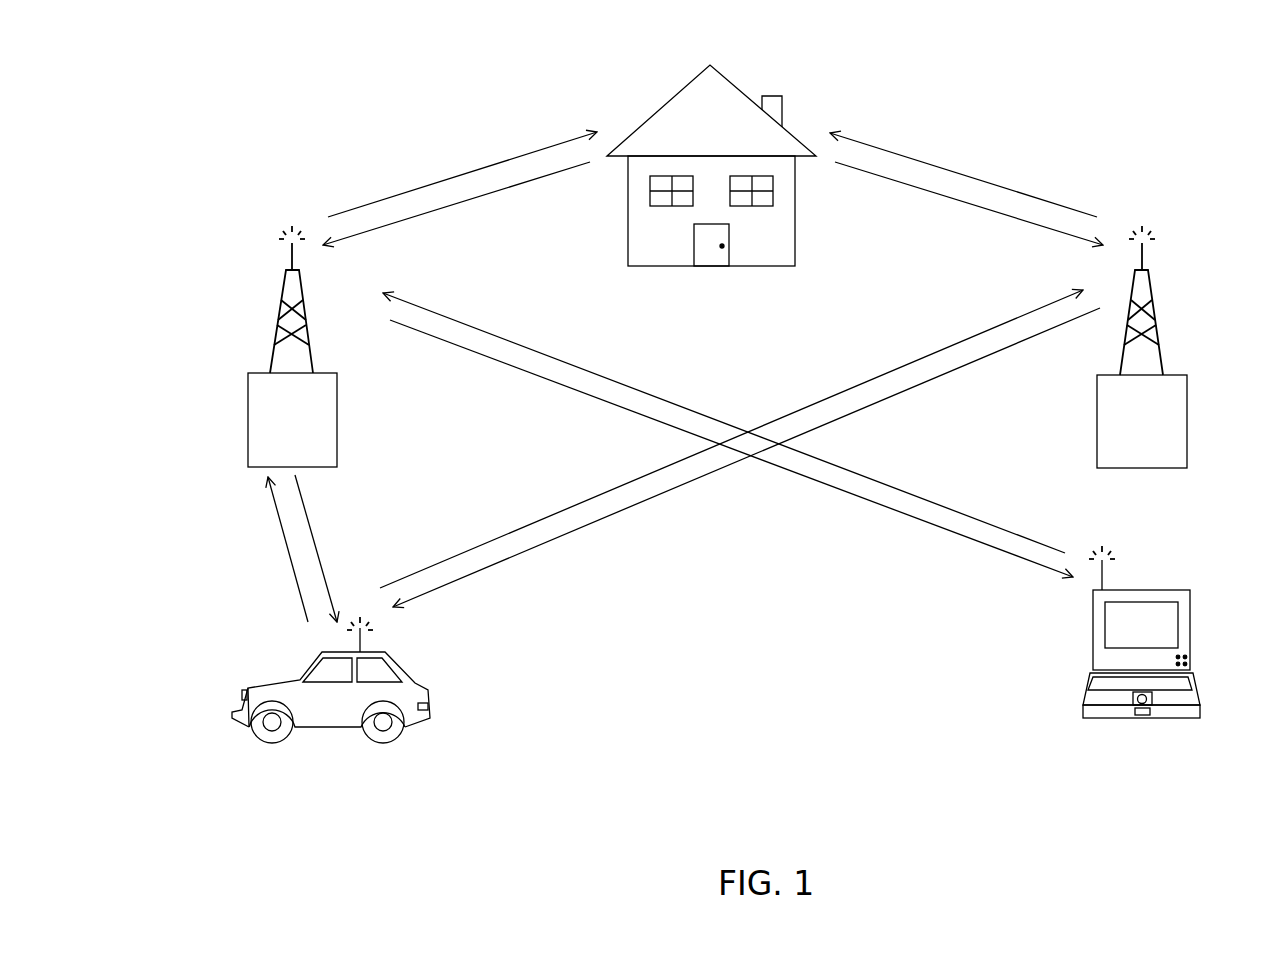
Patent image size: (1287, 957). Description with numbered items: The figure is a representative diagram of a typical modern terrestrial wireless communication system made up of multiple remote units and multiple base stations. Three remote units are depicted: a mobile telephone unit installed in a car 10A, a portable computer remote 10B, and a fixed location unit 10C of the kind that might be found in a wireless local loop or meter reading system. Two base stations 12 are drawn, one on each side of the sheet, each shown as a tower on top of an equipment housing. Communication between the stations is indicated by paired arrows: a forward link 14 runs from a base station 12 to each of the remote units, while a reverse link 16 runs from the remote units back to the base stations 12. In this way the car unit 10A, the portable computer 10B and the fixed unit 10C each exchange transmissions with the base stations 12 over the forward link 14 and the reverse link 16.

The mobile telephone unit installed in a car 10A is at (387, 650).
The portable computer remote 10B is at (1175, 590).
The fixed location unit 10C is at (733, 84).
The base station 12 is at (330, 373).
The forward link 14 is at (467, 173).
The reverse link 16 is at (417, 218).